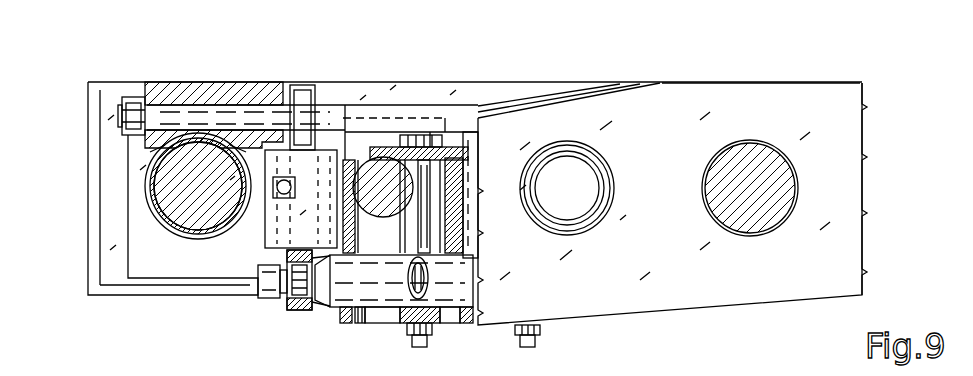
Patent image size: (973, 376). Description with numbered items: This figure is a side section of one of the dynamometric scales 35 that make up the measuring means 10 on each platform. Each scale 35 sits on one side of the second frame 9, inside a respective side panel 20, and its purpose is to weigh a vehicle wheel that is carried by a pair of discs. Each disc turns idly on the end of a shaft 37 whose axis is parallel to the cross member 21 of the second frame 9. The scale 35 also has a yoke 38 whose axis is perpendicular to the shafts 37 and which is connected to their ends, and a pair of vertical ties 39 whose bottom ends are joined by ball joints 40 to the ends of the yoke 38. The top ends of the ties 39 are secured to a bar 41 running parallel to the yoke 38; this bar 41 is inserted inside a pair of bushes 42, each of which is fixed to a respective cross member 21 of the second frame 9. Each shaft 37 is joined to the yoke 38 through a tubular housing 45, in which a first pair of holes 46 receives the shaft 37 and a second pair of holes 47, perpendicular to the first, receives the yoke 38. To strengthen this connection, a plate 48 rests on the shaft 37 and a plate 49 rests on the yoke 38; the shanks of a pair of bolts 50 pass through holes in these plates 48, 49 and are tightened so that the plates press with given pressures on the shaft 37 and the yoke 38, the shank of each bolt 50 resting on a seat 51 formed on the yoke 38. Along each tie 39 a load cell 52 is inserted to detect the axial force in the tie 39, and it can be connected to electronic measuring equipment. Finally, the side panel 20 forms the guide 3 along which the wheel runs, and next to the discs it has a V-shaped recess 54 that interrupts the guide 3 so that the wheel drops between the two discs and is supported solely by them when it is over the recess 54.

The guide 3 is at (706, 82).
The second frame 9 is at (855, 74).
The measuring means 10 is at (350, 334).
The side panel 20 is at (672, 184).
The cross member 21 is at (192, 217).
The dynamometric scale 35 is at (440, 102).
The shaft 37 is at (383, 182).
The yoke 38 is at (382, 290).
The vertical tie 39 is at (253, 232).
The ball joint 40 is at (290, 313).
The bar 41 is at (464, 112).
The bush 42 is at (205, 98).
The tubular housing 45 is at (335, 315).
The first pair of holes 46 is at (416, 205).
The second pair of holes 47 is at (373, 310).
The plate 48 is at (398, 152).
The plate 49 is at (422, 288).
The bolt 50 is at (472, 207).
The seat 51 is at (435, 328).
The load cell 52 is at (277, 213).
The V-shaped recess 54 is at (500, 100).